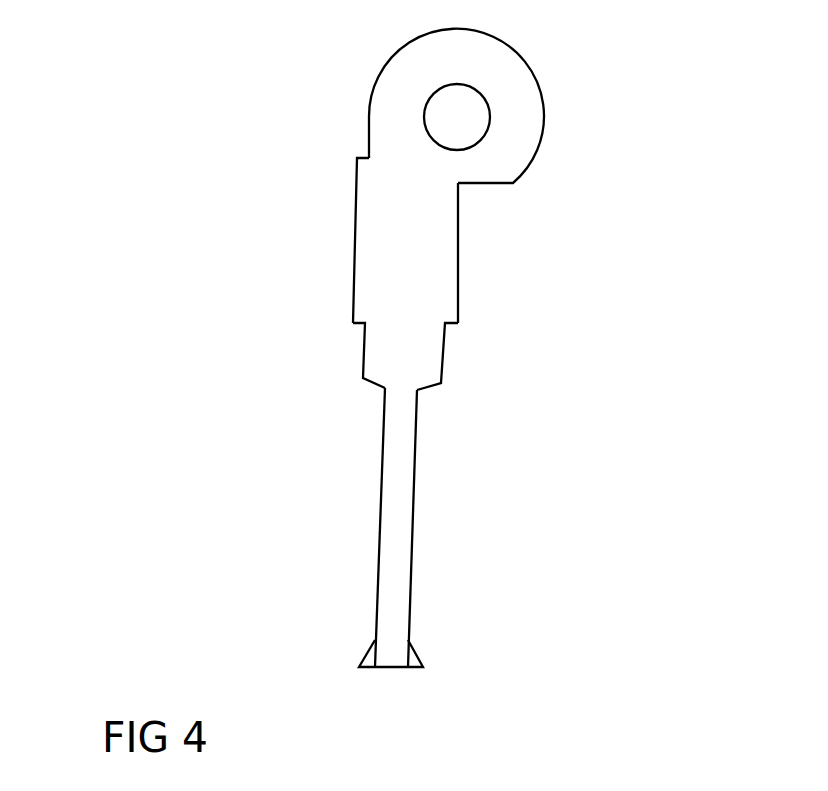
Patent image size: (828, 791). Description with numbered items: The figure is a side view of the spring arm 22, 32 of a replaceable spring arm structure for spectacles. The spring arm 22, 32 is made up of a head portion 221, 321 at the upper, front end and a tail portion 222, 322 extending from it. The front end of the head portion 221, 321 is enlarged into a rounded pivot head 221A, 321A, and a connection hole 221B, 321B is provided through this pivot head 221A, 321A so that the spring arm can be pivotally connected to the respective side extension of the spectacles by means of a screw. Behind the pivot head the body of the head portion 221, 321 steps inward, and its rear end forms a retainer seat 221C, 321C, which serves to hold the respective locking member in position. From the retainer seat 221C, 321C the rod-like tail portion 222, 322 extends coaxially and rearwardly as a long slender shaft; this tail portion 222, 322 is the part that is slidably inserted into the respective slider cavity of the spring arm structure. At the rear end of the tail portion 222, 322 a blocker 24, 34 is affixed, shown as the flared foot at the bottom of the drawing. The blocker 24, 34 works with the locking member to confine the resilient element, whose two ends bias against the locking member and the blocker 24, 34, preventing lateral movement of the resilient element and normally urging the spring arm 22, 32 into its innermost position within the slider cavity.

The spring arm 22 is at (374, 348).
The spring arm 32 is at (374, 348).
The head portion 221 is at (446, 223).
The head portion 321 is at (446, 223).
The pivot head 221A is at (536, 109).
The pivot head 321A is at (536, 109).
The connection hole 221B is at (563, 136).
The connection hole 321B is at (500, 78).
The retainer seat 221C is at (513, 370).
The retainer seat 321C is at (513, 370).
The tail portion 222 is at (368, 522).
The tail portion 322 is at (368, 527).
The blocker 24 is at (454, 627).
The blocker 34 is at (420, 657).